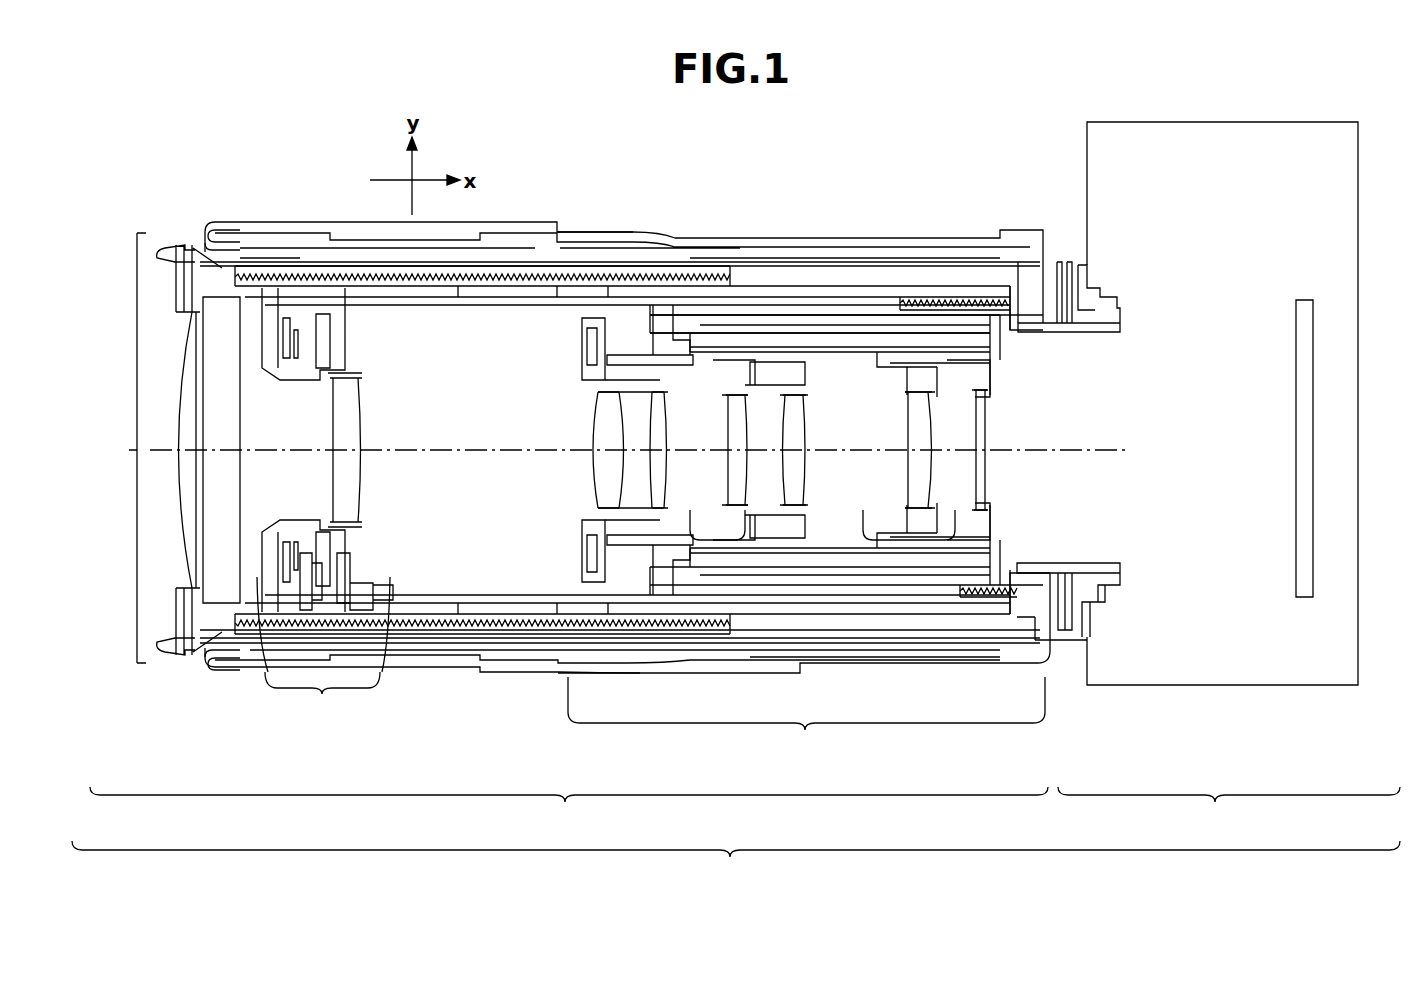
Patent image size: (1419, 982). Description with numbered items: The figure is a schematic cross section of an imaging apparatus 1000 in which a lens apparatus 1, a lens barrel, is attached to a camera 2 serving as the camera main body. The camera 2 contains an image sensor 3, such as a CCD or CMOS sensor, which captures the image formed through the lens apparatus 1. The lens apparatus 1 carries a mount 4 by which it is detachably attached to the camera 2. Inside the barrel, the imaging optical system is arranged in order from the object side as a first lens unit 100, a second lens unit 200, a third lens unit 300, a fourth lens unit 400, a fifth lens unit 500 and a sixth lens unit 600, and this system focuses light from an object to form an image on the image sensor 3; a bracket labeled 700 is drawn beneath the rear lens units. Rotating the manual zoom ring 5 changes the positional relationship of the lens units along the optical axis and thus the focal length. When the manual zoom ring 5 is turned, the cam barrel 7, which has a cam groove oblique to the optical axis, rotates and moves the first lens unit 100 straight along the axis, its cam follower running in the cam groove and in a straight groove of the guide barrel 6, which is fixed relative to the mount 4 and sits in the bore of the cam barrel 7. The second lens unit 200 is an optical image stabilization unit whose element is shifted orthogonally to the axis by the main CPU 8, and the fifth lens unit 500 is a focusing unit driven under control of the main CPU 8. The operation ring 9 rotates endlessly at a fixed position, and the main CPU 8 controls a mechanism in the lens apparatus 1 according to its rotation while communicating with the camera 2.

The imaging apparatus 1000 is at (736, 862).
The lens apparatus 1 is at (569, 809).
The camera 2 is at (1229, 477).
The image sensor 3 is at (1312, 565).
The mount 4 is at (1105, 300).
The manual zoom ring 5 is at (647, 236).
The guide barrel 6 is at (831, 292).
The cam barrel 7 is at (737, 290).
The main CPU 8 is at (1055, 300).
The operation ring 9 is at (273, 236).
The first lens unit 100 is at (124, 443).
The second lens unit 200 is at (603, 640).
The third lens unit 300 is at (712, 585).
The fourth lens unit 400 is at (792, 540).
The fifth lens unit 500 is at (940, 545).
The sixth lens unit 600 is at (862, 545).
The rear lens unit group 700 is at (806, 718).